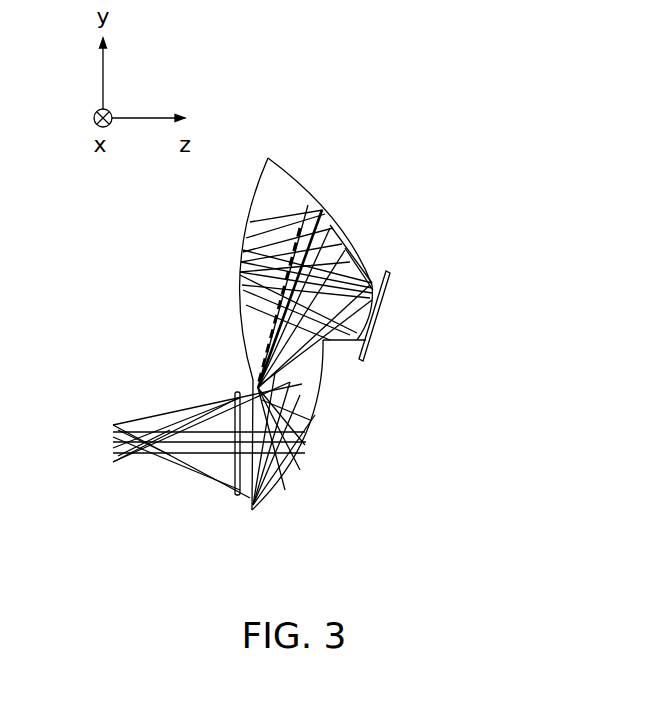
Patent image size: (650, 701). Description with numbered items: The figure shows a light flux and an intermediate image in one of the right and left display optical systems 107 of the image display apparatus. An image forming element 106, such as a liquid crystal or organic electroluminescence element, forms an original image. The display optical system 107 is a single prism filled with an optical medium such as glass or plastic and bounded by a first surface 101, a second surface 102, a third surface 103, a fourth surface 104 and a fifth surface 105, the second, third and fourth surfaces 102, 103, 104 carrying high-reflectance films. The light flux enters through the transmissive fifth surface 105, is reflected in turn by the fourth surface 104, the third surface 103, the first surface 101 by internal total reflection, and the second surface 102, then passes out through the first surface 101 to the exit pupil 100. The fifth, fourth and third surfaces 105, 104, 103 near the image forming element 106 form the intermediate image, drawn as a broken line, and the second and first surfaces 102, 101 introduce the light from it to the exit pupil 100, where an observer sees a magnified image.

The exit pupil 100 is at (135, 405).
The first surface 101 is at (250, 498).
The second surface 102 is at (297, 462).
The third surface 103 is at (303, 185).
The fourth surface 104 is at (240, 278).
The fifth surface 105 is at (371, 283).
The image forming element 106 is at (367, 338).
The display optical system 107 is at (303, 410).